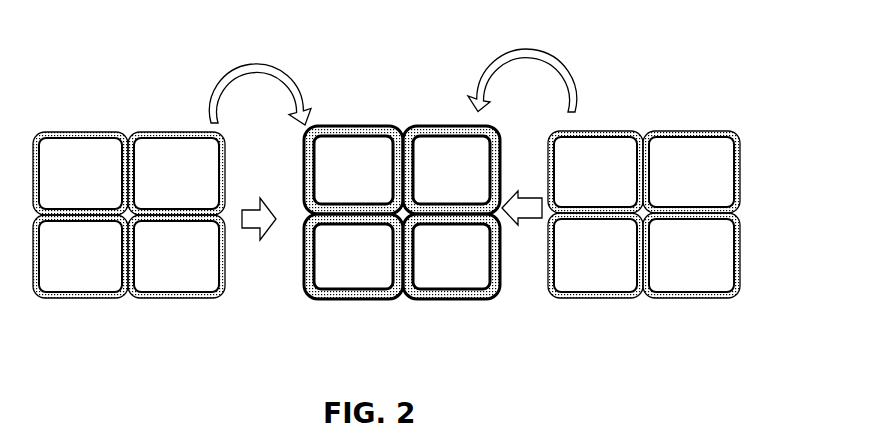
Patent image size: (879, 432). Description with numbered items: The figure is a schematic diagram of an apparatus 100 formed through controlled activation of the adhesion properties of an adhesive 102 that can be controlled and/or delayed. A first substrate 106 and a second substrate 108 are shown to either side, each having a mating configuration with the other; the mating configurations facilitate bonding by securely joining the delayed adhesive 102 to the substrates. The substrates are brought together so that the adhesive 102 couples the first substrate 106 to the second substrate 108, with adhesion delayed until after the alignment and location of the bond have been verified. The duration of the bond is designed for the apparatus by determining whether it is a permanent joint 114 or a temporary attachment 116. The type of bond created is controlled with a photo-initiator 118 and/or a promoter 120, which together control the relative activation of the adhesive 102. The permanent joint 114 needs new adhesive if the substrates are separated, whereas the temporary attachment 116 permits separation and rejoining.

The apparatus 100 is at (181, 56).
The adhesive 102 is at (359, 126).
The first substrate 106 is at (160, 130).
The second substrate 108 is at (493, 131).
The permanent joint 114 is at (340, 307).
The temporary attachment 116 is at (474, 310).
The photo-initiator 118 is at (252, 229).
The promoter 120 is at (530, 219).